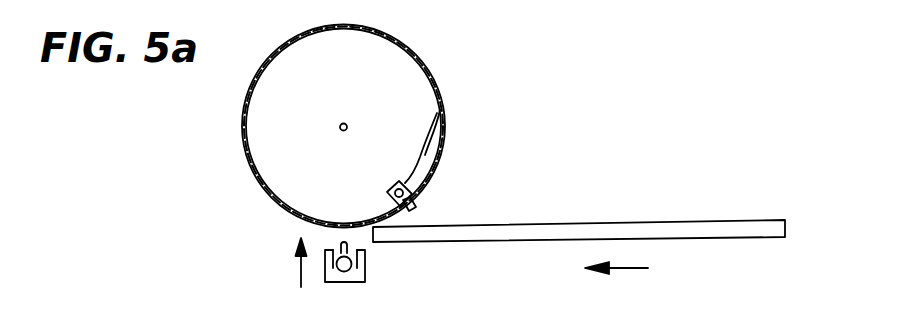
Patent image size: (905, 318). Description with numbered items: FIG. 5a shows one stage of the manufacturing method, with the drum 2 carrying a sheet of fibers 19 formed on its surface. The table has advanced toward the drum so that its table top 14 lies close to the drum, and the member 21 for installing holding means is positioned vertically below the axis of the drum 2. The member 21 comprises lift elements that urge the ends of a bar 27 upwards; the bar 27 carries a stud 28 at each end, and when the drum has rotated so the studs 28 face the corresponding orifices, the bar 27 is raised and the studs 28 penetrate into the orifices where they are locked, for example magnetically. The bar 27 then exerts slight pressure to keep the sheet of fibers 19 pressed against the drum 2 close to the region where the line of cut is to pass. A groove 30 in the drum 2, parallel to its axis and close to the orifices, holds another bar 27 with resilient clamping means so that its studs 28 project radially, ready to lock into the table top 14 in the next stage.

The drum 2 is at (277, 88).
The table top 14 is at (626, 229).
The sheet of fibers 19 is at (243, 125).
The member for installing holding means 21 is at (357, 272).
The bar 27 is at (414, 188).
The stud 28 is at (413, 207).
The groove 30 is at (442, 119).